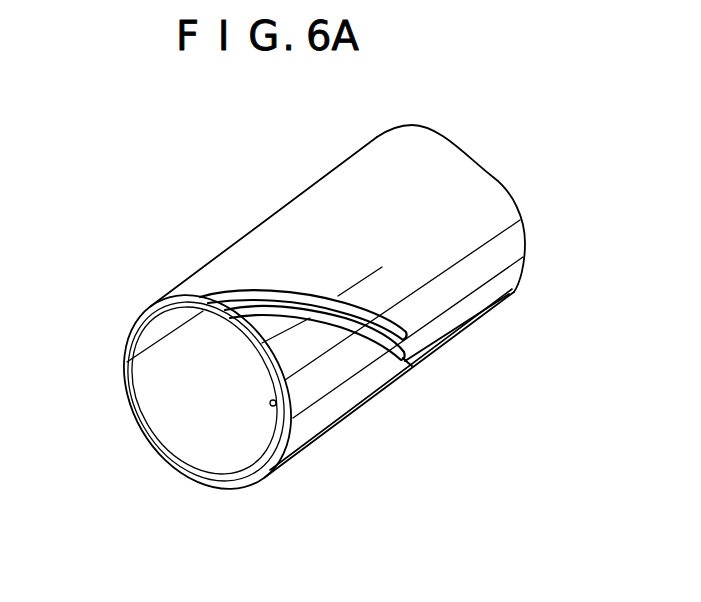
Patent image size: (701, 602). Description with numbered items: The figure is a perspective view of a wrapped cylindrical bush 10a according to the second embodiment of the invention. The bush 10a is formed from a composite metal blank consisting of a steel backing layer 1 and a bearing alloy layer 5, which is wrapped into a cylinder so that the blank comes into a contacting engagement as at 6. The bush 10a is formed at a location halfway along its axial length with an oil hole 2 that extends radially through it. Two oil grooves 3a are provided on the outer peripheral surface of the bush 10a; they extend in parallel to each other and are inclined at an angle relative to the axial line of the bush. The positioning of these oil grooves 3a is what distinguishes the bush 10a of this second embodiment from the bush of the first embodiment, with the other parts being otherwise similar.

The wrapped cylindrical bush 10a is at (236, 234).
The steel backing layer 1 is at (142, 432).
The bearing alloy layer 5 is at (173, 453).
The contacting engagement 6 is at (126, 363).
The oil hole 2 is at (271, 406).
The oil grooves 3a is at (409, 336).